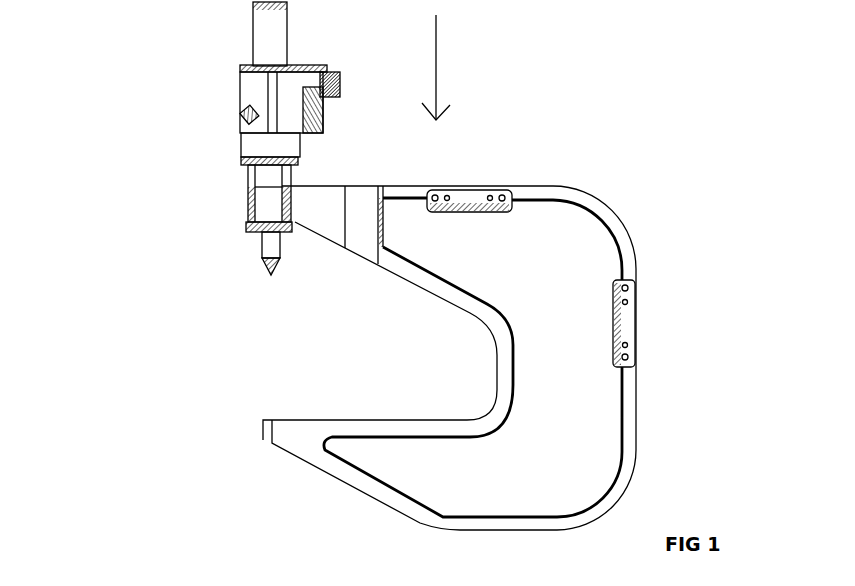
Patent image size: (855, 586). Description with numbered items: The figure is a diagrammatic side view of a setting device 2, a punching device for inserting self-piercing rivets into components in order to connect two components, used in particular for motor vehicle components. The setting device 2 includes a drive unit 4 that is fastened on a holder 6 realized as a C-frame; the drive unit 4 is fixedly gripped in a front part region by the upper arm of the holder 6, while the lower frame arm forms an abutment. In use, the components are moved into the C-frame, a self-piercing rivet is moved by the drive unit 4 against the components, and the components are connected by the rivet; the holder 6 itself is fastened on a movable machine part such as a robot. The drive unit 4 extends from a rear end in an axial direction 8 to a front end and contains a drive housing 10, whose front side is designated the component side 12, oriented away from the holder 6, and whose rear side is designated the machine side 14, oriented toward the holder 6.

The setting device 2 is at (820, 112).
The drive unit 4 is at (252, 118).
The holder 6 is at (577, 285).
The axial direction 8 is at (436, 60).
The drive housing 10 is at (240, 82).
The component side 12 is at (107, 144).
The machine side 14 is at (397, 140).